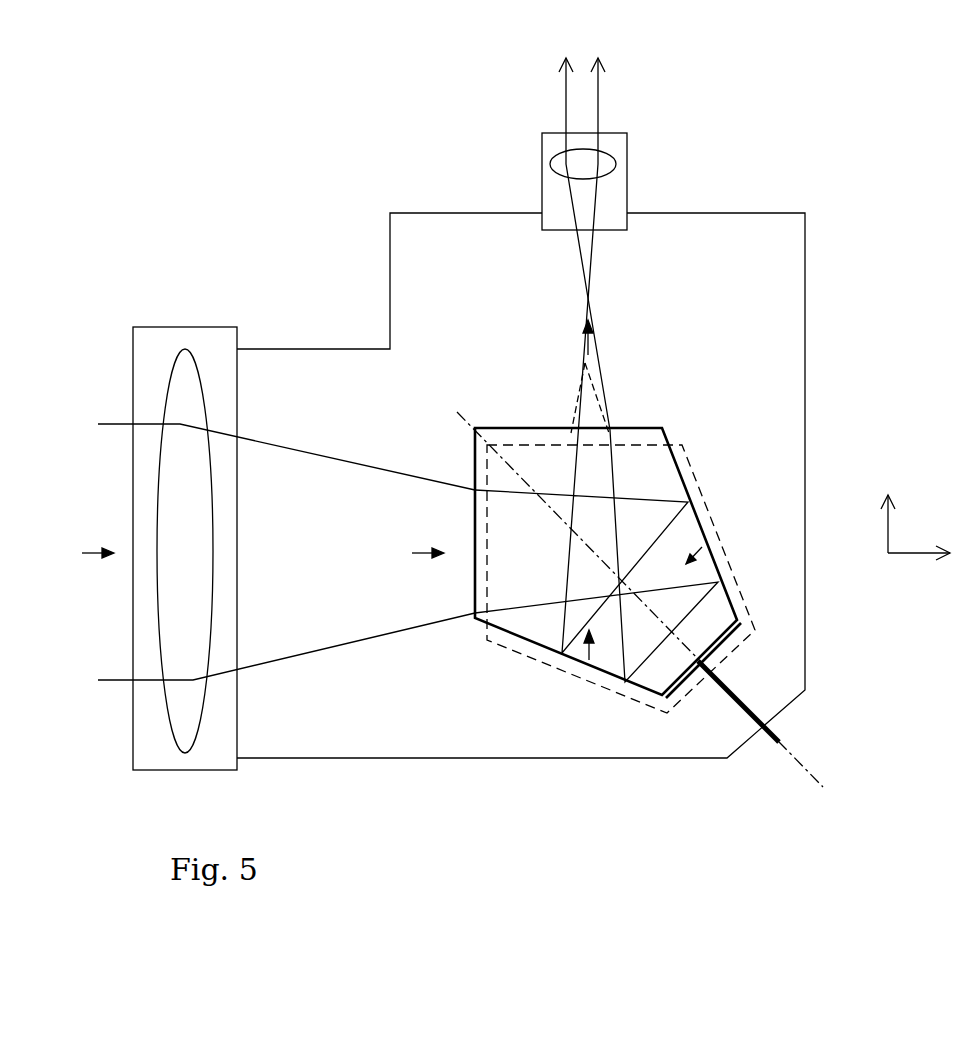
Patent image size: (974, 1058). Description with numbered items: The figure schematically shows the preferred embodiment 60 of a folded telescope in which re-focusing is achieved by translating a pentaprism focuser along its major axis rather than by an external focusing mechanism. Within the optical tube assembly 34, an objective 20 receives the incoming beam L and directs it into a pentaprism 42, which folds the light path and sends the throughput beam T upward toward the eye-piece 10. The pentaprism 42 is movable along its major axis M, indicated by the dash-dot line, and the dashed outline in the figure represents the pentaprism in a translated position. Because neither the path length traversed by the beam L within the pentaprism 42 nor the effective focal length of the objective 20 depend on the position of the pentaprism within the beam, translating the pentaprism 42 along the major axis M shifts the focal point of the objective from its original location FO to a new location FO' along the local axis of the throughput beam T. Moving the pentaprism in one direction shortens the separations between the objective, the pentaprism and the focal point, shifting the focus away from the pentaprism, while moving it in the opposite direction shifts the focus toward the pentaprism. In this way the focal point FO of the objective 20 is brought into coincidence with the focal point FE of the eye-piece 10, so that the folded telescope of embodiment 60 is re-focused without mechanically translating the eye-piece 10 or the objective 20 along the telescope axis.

The embodiment of a folded telescope 60 is at (332, 145).
The eye-piece 10 is at (622, 145).
The objective 20 is at (150, 350).
The optical tube assembly 34 is at (780, 342).
The pentaprism 42 is at (652, 678).
The major axis M is at (800, 757).
The beam L is at (415, 557).
The throughput beam T is at (590, 342).
The focal point of the eye-piece FE is at (592, 290).
The shifted focal point of the objective lens FO' is at (534, 274).
The focal point of the objective lens FO is at (536, 353).